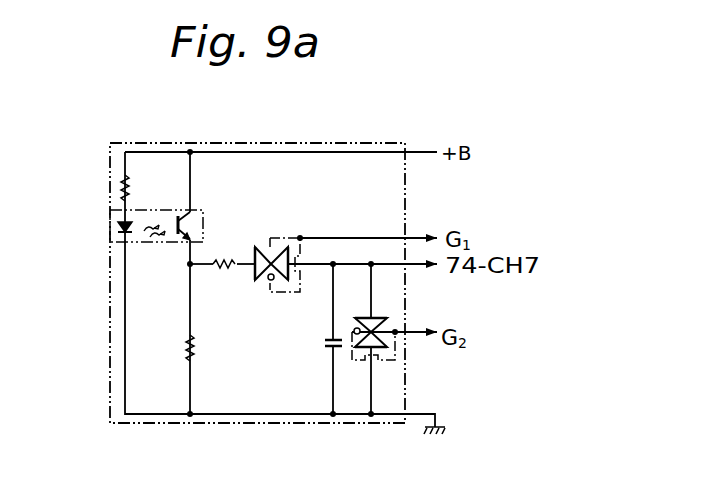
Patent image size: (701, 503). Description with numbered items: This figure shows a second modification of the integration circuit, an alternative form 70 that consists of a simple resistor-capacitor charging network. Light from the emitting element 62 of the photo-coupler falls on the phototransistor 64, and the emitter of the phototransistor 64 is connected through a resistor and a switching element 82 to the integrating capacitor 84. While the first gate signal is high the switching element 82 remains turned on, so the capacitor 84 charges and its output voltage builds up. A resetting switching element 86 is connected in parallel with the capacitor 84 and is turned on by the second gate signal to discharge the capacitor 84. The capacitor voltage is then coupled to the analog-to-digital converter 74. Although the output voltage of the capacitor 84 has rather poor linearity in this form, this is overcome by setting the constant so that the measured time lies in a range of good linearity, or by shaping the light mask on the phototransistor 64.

The light emitting element 62 is at (113, 229).
The phototransistor 64 is at (180, 244).
The integration circuit 70 is at (487, 168).
The analog-to-digital converter 74 is at (414, 265).
The switching element 82 is at (268, 280).
The integrating capacitor 84 is at (326, 343).
The resetting switching element 86 is at (455, 288).